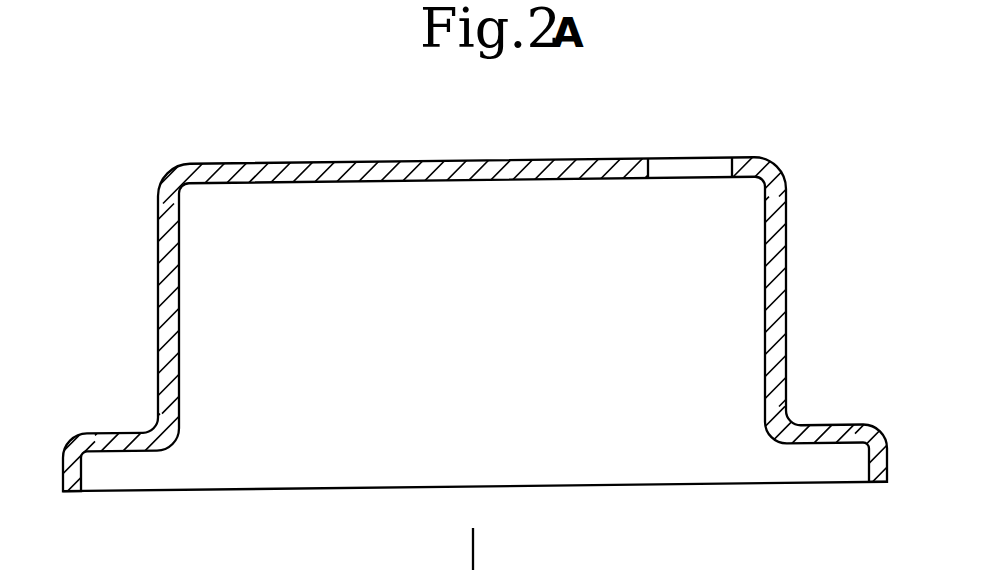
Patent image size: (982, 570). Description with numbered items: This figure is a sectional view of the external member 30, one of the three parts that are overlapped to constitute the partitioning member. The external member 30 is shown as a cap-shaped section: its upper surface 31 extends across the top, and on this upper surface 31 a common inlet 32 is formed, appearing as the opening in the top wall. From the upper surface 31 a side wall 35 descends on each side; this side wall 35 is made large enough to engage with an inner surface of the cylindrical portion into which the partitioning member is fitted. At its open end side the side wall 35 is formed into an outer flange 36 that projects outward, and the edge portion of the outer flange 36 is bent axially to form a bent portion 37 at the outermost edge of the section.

The external member 30 is at (218, 127).
The upper surface 31 is at (363, 161).
The common inlet 32 is at (692, 157).
The side wall 35 is at (158, 308).
The outer flange 36 is at (123, 442).
The bent portion 37 is at (63, 465).